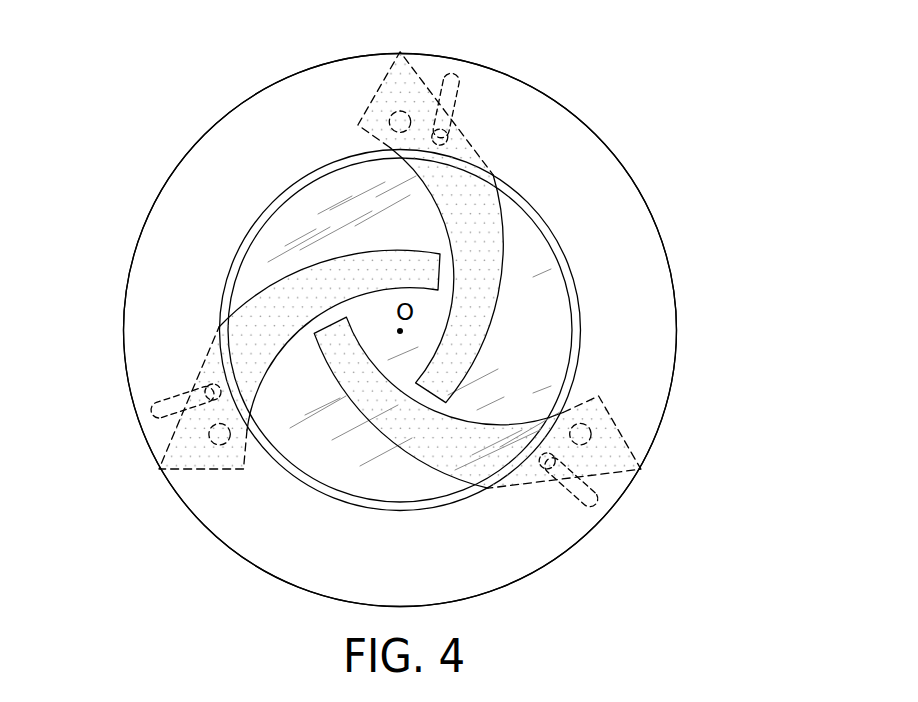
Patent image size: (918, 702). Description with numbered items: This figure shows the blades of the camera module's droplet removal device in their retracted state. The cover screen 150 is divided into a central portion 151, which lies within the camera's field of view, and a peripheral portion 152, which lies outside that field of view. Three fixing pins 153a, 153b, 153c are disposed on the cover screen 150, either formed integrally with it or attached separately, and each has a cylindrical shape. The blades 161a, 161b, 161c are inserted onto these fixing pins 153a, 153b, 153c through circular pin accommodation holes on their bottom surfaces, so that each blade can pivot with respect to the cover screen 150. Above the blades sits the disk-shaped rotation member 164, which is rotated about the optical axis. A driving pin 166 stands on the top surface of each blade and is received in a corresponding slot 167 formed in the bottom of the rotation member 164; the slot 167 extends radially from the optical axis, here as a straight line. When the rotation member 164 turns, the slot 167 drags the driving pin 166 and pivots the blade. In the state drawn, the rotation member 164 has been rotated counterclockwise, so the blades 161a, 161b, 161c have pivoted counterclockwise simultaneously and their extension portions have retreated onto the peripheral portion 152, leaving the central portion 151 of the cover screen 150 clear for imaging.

The cover screen 150 is at (675, 290).
The central portion 151 is at (532, 275).
The peripheral portion 152 is at (642, 257).
The fixing pin 153a is at (210, 436).
The fixing pin 153b is at (592, 430).
The fixing pin 153c is at (375, 106).
The blade 161a is at (208, 470).
The blade 161b is at (485, 132).
The blade 161c is at (607, 401).
The rotation member 164 is at (677, 331).
The driving pin 166 is at (206, 383).
The slot 167 is at (163, 402).